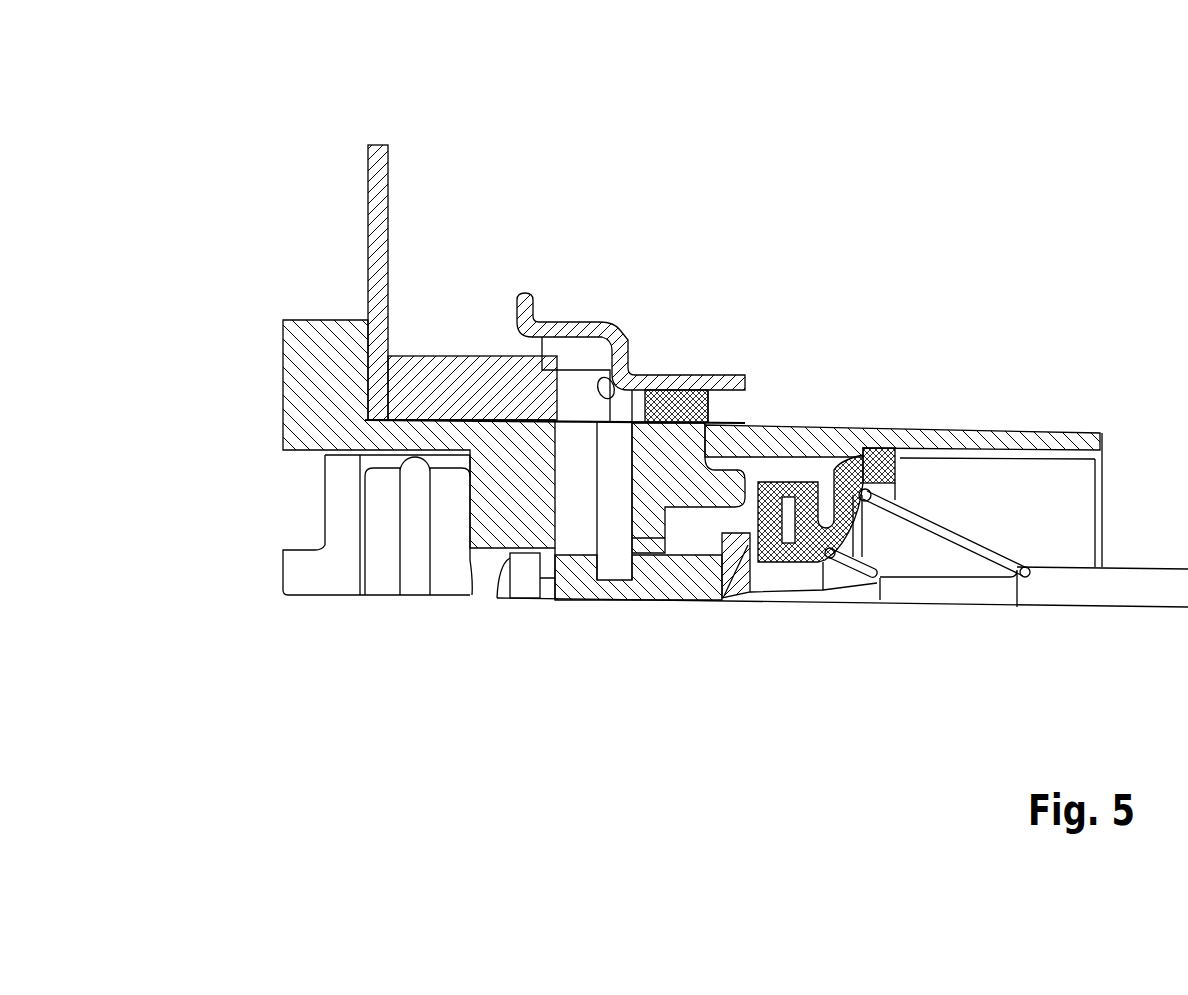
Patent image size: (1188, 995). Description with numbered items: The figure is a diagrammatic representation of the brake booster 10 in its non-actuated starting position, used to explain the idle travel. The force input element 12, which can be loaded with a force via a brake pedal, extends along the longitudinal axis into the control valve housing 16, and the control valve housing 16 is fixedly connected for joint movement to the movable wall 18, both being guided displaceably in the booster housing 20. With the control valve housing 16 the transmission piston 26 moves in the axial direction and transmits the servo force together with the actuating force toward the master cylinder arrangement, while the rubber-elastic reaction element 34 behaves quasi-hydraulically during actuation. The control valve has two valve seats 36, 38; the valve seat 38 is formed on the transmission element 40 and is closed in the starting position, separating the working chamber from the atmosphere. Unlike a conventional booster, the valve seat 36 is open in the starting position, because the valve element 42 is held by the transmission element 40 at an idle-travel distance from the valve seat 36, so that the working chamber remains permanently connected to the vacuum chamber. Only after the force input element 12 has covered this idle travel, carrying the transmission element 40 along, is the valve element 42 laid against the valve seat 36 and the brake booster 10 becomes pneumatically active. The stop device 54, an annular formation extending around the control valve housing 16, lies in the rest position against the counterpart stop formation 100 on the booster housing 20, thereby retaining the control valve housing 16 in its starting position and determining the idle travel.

The brake booster 10 is at (1042, 293).
The force input element 12 is at (900, 588).
The control valve housing 16 is at (315, 318).
The movable wall 18 is at (390, 180).
The booster housing 20 is at (668, 392).
The transmission piston 26 is at (337, 568).
The reaction element 34 is at (430, 577).
The valve seat 36 is at (733, 487).
The valve seat 38 is at (737, 585).
The transmission element 40 is at (572, 600).
The valve element 42 is at (797, 480).
The stop device 54 is at (582, 383).
The counterpart stop formation 100 is at (633, 363).